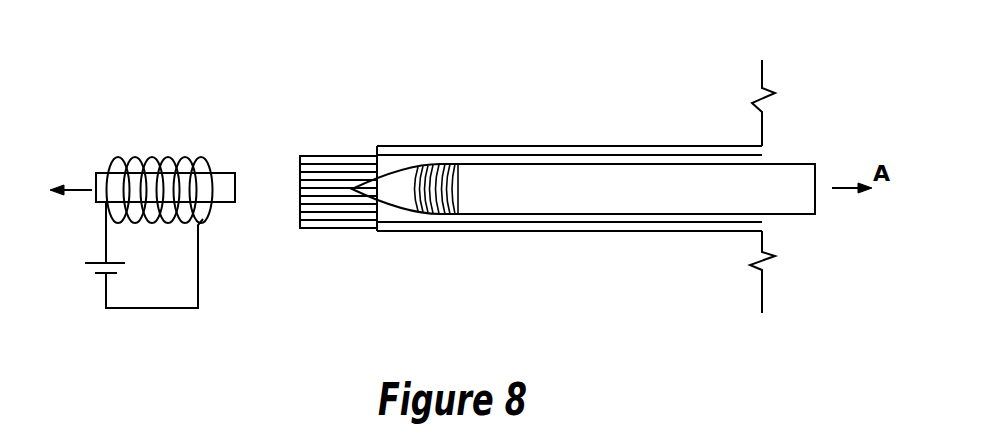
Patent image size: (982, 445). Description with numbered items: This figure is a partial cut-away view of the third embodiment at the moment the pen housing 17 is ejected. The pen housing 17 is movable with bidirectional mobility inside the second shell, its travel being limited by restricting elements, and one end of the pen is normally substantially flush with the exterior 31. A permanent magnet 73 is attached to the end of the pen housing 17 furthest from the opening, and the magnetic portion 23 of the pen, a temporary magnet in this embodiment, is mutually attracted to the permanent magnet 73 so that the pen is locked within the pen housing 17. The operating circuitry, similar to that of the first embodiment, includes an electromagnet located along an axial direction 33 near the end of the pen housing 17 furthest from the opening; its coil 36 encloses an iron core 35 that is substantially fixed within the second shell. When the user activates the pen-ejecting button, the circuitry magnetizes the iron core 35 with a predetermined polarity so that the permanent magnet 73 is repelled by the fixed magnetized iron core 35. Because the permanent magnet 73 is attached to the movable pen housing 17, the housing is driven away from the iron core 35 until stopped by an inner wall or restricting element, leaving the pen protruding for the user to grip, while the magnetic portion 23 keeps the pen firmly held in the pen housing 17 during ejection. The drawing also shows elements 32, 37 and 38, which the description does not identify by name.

The pen housing 17 is at (623, 146).
The magnetic portion 23 is at (437, 167).
The exterior 31 is at (763, 122).
The inner member with tapered tip 32 is at (374, 167).
The axial direction 33 is at (59, 183).
The iron core 35 is at (97, 175).
The coil 36 is at (140, 156).
The battery 37 is at (85, 268).
The circuit wiring 38 is at (142, 310).
The permanent magnet 73 is at (310, 156).